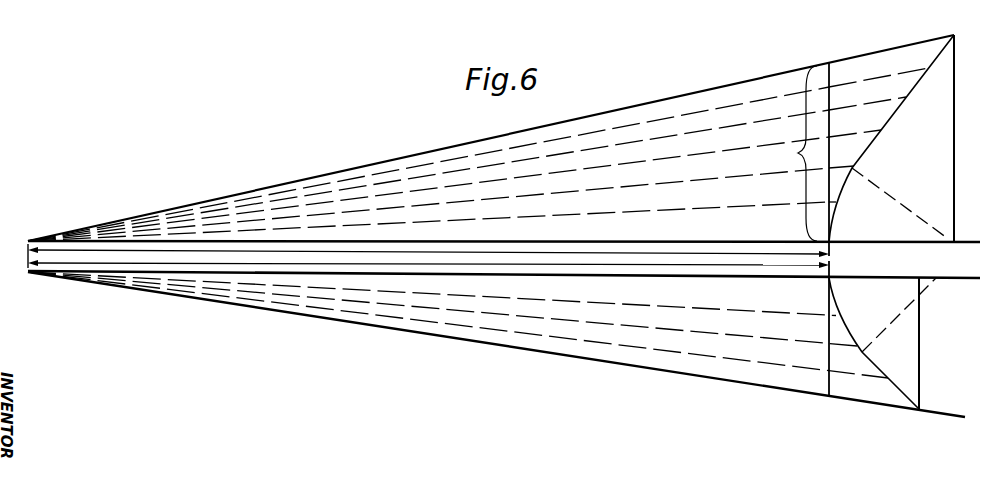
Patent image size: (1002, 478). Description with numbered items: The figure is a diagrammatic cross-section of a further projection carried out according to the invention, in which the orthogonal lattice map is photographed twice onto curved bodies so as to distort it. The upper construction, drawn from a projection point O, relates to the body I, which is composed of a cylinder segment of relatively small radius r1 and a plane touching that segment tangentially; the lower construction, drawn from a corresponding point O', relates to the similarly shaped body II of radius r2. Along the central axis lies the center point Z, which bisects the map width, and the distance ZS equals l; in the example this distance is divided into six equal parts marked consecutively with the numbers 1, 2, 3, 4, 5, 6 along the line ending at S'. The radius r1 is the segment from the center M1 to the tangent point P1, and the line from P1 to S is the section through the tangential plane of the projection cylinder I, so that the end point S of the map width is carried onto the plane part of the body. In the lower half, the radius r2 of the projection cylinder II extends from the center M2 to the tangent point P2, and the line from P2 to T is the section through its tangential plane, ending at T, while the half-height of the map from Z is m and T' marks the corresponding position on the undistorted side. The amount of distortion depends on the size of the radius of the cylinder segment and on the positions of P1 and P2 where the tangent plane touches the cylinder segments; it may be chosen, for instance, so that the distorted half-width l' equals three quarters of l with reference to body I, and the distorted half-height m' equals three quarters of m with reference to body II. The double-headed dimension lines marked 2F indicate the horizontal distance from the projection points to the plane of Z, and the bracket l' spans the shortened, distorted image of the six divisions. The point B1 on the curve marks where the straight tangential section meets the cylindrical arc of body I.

The origin point O of upper construction O is at (495, 241).
The origin point O' of lower construction O' is at (494, 273).
The end point of the map width S is at (499, 135).
The point S' and vertical S'-Z S' is at (833, 150).
The center point Z is at (828, 312).
The half-width distance ZS l is at (891, 138).
The distorted half-width l' is at (797, 153).
The division mark 1 is at (818, 220).
The division mark 2 is at (432, 211).
The division mark 3 is at (441, 193).
The division mark 4 is at (454, 180).
The division mark 5 is at (467, 167).
The division mark 6 is at (478, 154).
The point B1 on curve l B1 is at (845, 160).
The radius of projection cylinder I r1 is at (899, 203).
The center of projection cylinder I M1 is at (974, 241).
The tangent line position on cylinder I P1 is at (947, 258).
The projection body I is at (985, 137).
The distance 2F (focal length doubled) 2F is at (428, 259).
The end point of the map height T is at (496, 353).
The point T' is at (829, 411).
The half-height distance ZT m is at (874, 343).
The distorted half-height m' is at (458, 325).
The radius of projection cylinder II r2 is at (899, 315).
The tangent line position on cylinder II P2 is at (889, 316).
The center of projection cylinder II M2 is at (964, 272).
The projection body II is at (958, 340).